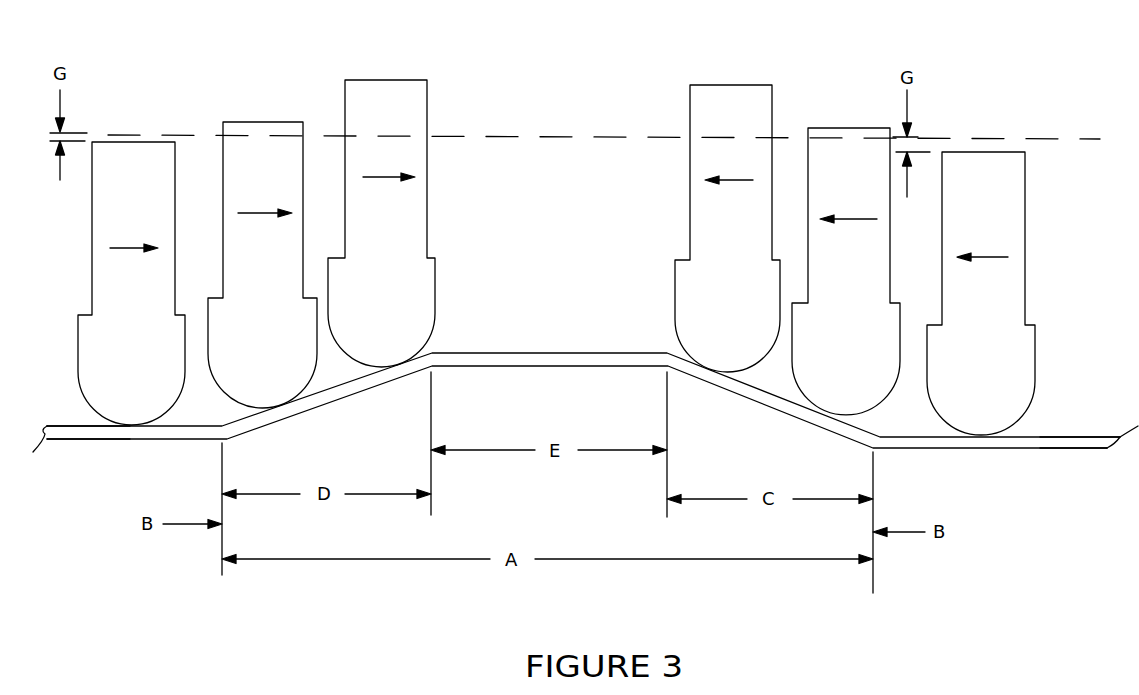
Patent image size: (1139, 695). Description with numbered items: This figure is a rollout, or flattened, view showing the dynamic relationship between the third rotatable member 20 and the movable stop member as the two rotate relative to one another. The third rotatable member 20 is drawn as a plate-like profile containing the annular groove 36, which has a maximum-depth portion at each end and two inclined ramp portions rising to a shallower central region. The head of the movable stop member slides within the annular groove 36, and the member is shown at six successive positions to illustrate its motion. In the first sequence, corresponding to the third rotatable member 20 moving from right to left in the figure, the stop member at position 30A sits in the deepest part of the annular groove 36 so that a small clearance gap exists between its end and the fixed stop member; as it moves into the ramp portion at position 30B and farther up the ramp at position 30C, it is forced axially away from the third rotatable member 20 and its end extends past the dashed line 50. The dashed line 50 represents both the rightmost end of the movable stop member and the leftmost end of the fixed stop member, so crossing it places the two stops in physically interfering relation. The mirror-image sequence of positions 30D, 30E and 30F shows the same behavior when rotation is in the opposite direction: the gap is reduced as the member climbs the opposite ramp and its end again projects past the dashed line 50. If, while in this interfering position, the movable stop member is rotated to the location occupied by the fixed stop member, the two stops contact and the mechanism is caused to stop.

The third rotatable member 20 is at (587, 358).
The annular groove 36 is at (68, 425).
The movable stop member position 30A is at (156, 357).
The movable stop member position 30B is at (288, 335).
The movable stop member position 30C is at (413, 295).
The movable stop member position 30D is at (1010, 361).
The movable stop member position 30E is at (877, 341).
The movable stop member position 30F is at (754, 298).
The dashed line 50 is at (453, 137).